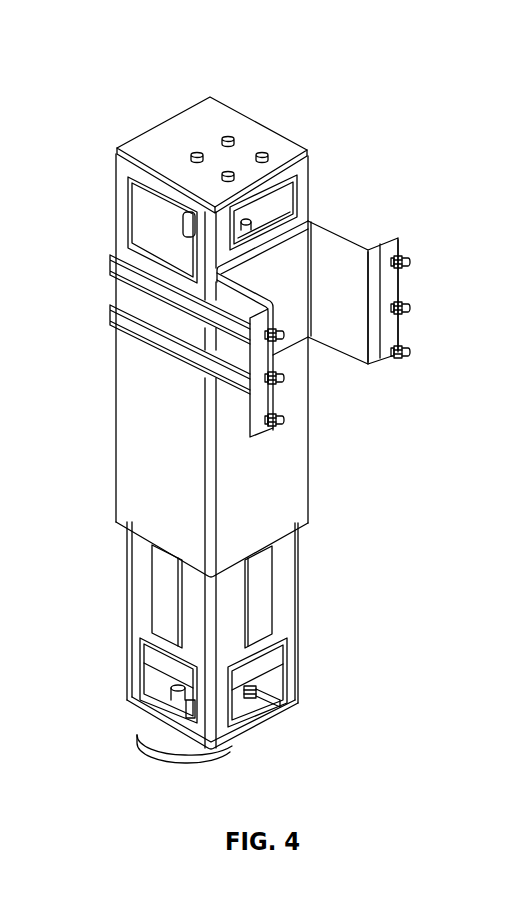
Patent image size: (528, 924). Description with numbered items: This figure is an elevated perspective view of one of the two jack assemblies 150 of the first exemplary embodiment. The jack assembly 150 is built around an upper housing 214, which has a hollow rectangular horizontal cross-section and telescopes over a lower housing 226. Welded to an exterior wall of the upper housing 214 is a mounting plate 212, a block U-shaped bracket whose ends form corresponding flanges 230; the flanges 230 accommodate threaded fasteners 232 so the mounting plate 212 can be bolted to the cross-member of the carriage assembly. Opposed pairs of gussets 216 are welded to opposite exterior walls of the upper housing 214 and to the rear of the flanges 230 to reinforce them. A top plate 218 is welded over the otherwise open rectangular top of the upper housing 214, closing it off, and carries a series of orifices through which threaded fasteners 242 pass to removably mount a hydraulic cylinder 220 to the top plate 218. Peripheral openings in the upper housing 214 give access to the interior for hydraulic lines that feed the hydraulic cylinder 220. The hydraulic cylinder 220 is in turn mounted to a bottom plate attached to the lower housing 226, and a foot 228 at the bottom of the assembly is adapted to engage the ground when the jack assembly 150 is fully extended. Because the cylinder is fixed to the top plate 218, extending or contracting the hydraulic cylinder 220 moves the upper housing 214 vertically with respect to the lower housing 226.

The jack assembly 150 is at (372, 64).
The mounting plate 212 is at (352, 255).
The upper housing 214 is at (297, 470).
The gussets 216 is at (114, 265).
The top plate 218 is at (222, 112).
The hydraulic cylinder 220 is at (300, 198).
The lower housing 226 is at (286, 612).
The foot 228 is at (175, 753).
The flanges 230 is at (393, 284).
The threaded fasteners 232 is at (408, 266).
The threaded fasteners 242 is at (194, 152).